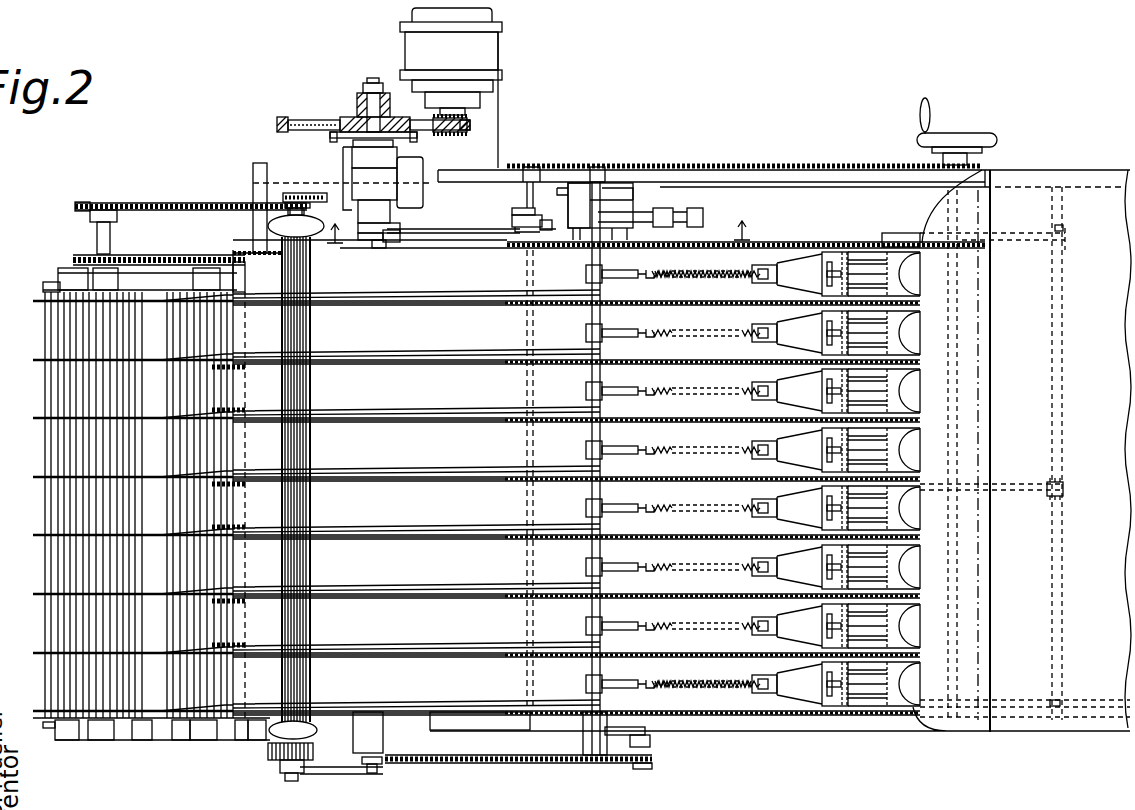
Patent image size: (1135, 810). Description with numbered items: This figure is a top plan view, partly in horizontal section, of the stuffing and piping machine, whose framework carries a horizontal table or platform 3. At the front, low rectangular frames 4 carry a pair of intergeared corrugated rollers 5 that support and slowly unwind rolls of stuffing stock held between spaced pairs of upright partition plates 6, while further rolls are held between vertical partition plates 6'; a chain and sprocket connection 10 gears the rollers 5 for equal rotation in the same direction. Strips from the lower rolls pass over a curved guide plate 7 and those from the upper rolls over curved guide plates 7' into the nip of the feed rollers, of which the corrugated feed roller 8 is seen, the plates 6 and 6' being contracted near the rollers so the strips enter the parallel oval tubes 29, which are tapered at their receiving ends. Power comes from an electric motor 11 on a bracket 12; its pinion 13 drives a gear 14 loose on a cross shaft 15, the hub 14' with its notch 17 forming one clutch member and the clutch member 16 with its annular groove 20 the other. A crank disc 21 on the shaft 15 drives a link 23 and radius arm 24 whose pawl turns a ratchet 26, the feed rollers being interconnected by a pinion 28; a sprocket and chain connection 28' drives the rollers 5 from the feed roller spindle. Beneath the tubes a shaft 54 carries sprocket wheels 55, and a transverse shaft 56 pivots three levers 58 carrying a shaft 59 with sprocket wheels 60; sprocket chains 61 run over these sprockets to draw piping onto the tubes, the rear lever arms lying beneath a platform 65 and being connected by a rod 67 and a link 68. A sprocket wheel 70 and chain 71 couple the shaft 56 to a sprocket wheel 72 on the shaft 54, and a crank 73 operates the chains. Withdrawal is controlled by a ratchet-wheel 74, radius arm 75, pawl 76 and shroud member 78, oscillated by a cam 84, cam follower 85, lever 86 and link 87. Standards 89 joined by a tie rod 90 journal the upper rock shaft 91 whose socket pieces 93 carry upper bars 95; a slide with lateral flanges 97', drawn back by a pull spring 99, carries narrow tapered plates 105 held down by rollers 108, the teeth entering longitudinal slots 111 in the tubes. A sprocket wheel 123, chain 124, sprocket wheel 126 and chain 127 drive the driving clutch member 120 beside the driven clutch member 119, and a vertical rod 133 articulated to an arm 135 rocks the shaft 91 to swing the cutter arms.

The low rectangular frames 4 is at (140, 266).
The intergeared corrugated rollers 5 is at (172, 331).
The upright partition plates 6 is at (123, 503).
The vertical partition plates 6' is at (306, 570).
The curved guide plate 7 is at (248, 484).
The curved guide plates 7' is at (241, 506).
The corrugated feed roller 8 is at (311, 391).
The chain and sprocket connection 10 is at (152, 275).
The electric motor 11 is at (451, 61).
The bracket 12 is at (499, 112).
The pinion 13 is at (464, 134).
The gear 14 is at (362, 111).
The hub of the gear 14' is at (357, 97).
The cross shaft 15 is at (373, 90).
The clutch member 16 is at (350, 154).
The notch 17 is at (357, 127).
The annular groove 20 is at (341, 186).
The crank disc 21 is at (383, 770).
The link 23 is at (328, 776).
The radius arm 24 is at (282, 771).
The ratchet 26 is at (270, 758).
The pinion 28 is at (273, 740).
The sprocket and chain connection 28' is at (191, 208).
The tubes 29 is at (576, 490).
The shaft 54 is at (530, 406).
The sprocket wheels 55 is at (505, 356).
The transverse shaft 56 is at (960, 362).
The levers 58 is at (1012, 233).
The shaft 59 is at (935, 440).
The sprocket wheels 60 is at (955, 360).
The sprocket chains 61 is at (740, 361).
The platform 65 is at (1080, 170).
The rod 67 is at (1063, 412).
The link 68 is at (1065, 486).
The sprocket wheel 70 is at (982, 167).
The chain 71 is at (843, 166).
The sprocket wheel 72 is at (512, 166).
The crank 73 is at (931, 118).
The ratchet-wheel 74 is at (552, 225).
The radius arm 75 is at (515, 214).
The pawl 76 is at (511, 224).
The segmental shroud member 78 is at (530, 234).
The cam 84 is at (360, 241).
The cam follower 85 is at (380, 249).
The lever 86 is at (400, 240).
The link 87 is at (452, 229).
The standards 89 is at (592, 167).
The tie rod 90 is at (582, 700).
The upper rock shaft 91 is at (590, 312).
The socket pieces 93 is at (622, 448).
The upper bars 95 is at (705, 448).
The lateral flanges 97' is at (719, 455).
The pull spring 99 is at (662, 448).
The narrow tapered plates 105 is at (805, 326).
The rollers 108 is at (828, 260).
The longitudinal slots 111 is at (905, 346).
The driven clutch member 119 is at (605, 733).
The driving clutch member 120 is at (650, 746).
The sprocket wheel 123 is at (330, 128).
The chain 124 is at (333, 137).
The sprocket wheel 126 is at (652, 768).
The chain 127 is at (505, 764).
The vertical rod 133 is at (703, 210).
The arm 135 is at (630, 211).
The horizontal table or platform 3 is at (539, 221).